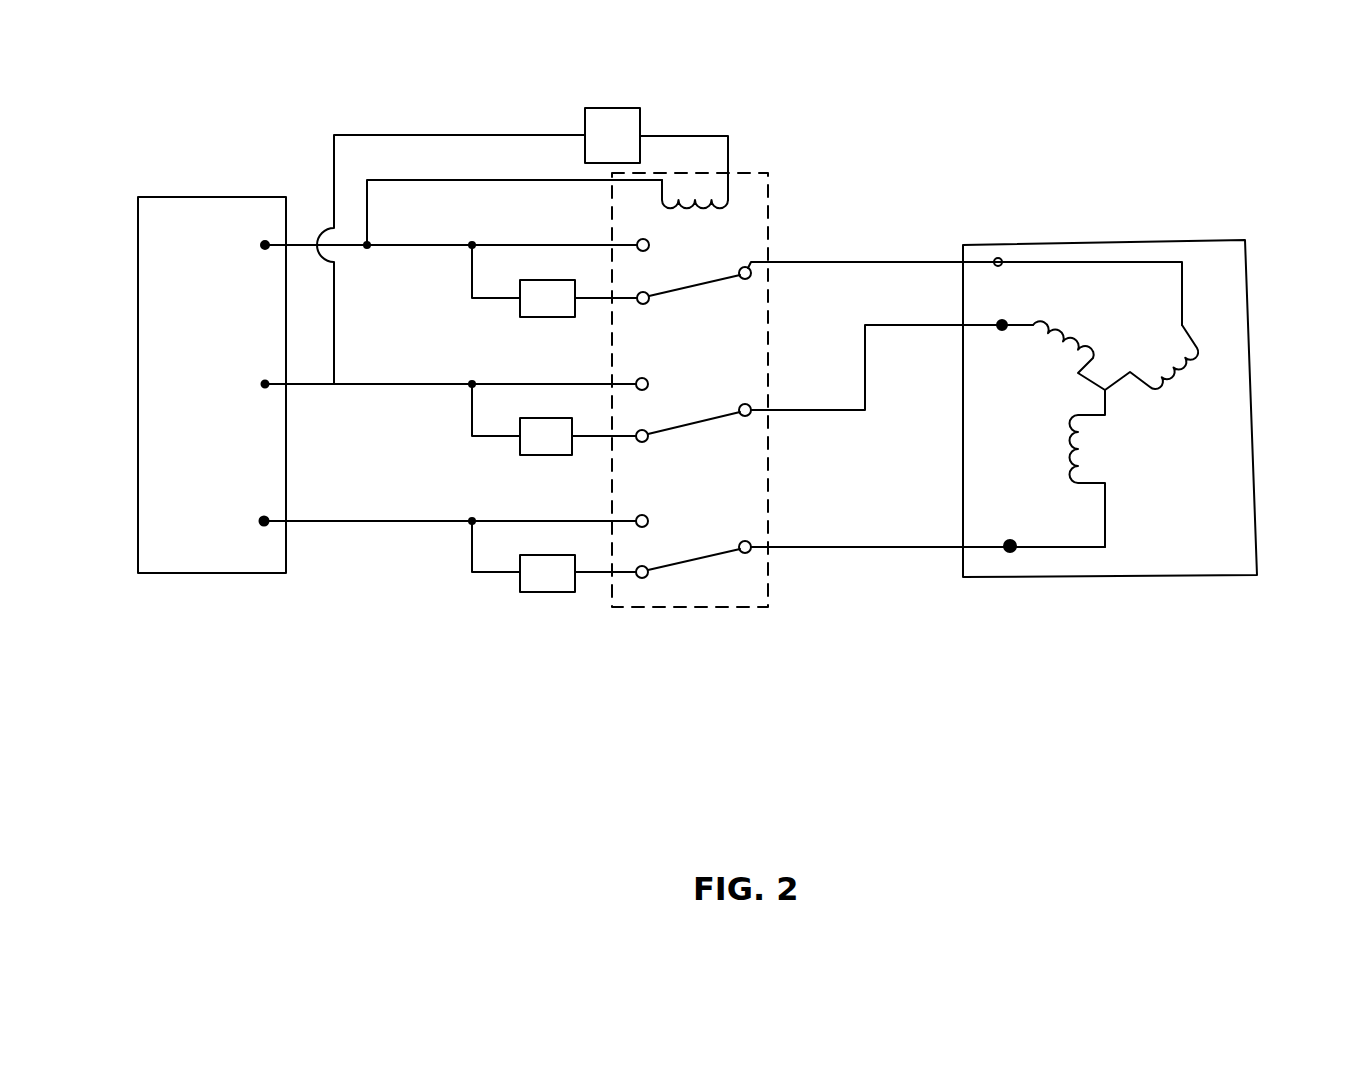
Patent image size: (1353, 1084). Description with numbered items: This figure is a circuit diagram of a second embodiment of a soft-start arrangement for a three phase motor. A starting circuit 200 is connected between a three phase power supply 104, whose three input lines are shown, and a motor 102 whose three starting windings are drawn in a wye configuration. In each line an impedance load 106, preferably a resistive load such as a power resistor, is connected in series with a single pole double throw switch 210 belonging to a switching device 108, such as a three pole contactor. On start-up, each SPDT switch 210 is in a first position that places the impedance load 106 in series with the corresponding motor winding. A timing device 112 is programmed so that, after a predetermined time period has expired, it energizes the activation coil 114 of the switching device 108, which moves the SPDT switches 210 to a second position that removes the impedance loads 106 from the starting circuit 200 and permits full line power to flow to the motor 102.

The motor 102 is at (1230, 578).
The three phase power supply 104 is at (162, 575).
The impedance load 106 is at (552, 318).
The switching device 108 is at (770, 600).
The timing device 112 is at (640, 108).
The activation coil 114 is at (727, 188).
The starting circuit 200 is at (512, 730).
The single pole double throw switch 210 is at (698, 285).